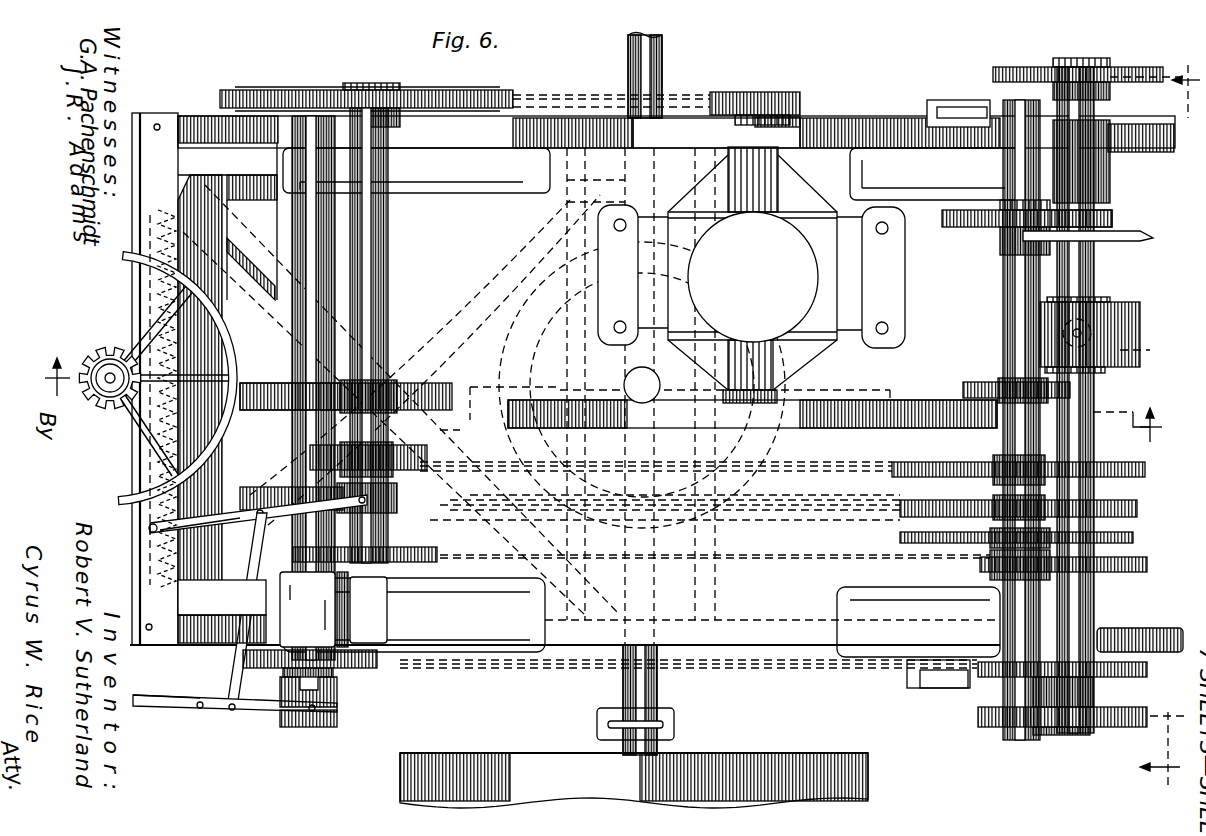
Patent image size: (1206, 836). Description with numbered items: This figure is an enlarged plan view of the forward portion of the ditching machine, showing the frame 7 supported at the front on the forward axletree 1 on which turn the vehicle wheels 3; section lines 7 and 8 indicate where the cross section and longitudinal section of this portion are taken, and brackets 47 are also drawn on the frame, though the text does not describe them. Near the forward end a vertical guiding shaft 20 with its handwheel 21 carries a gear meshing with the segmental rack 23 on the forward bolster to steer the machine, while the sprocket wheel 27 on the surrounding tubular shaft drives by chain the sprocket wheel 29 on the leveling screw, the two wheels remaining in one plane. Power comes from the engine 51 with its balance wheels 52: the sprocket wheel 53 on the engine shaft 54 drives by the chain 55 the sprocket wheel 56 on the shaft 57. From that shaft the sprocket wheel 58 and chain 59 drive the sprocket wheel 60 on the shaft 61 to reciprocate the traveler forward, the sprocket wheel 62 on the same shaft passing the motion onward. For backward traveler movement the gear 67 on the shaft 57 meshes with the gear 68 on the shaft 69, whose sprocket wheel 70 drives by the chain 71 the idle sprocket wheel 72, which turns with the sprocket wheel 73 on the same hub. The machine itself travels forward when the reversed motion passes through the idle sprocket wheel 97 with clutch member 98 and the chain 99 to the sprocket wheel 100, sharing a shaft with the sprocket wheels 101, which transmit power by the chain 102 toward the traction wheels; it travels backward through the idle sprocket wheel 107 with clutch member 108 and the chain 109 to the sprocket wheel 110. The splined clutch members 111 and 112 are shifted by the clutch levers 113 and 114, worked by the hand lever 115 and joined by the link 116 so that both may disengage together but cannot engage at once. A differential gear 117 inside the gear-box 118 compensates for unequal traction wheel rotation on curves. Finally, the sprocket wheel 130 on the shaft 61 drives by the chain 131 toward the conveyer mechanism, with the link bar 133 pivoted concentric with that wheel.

The forward axletree 1 is at (660, 676).
The vehicle wheels 3 is at (518, 755).
The frame 7 is at (1155, 427).
The segmental plates 8 is at (601, 400).
The guiding shaft 20 is at (96, 372).
The handwheel 21 is at (122, 258).
The segmental rack 23 is at (128, 460).
The sprocket wheel 27 is at (100, 360).
The sprocket wheel 29 is at (530, 320).
The bracket 47 is at (958, 104).
The engine 51 is at (751, 275).
The balance wheels 52 is at (752, 273).
The sprocket wheel 53 is at (778, 92).
The engine shaft 54 is at (802, 118).
The chain 55 is at (610, 98).
The sprocket wheel 56 is at (478, 92).
The shaft 57 is at (398, 246).
The sprocket wheel 58 is at (370, 455).
The chain 59 is at (842, 470).
The sprocket wheel 60 is at (928, 466).
The shaft 61 is at (1004, 445).
The sprocket wheel 62 is at (968, 390).
The gear 67 is at (432, 384).
The gear 68 is at (282, 382).
The shaft 69 is at (292, 300).
The sprocket wheel 70 is at (272, 485).
The chain 71 is at (476, 502).
The sprocket wheel 72 is at (920, 502).
The sprocket wheel 73 is at (900, 538).
The idle sprocket wheel 97 is at (368, 670).
The clutch member 98 is at (296, 672).
The chain 99 is at (552, 666).
The sprocket wheel 100 is at (1140, 676).
The sprocket wheels 101 is at (1035, 68).
The chain 102 is at (1160, 58).
The idle sprocket wheel 107 is at (408, 555).
The clutch member 108 is at (405, 535).
The chain 109 is at (782, 562).
The sprocket wheel 110 is at (1140, 568).
The splined clutch member 111 is at (338, 708).
The splined clutch member 112 is at (470, 505).
The clutch lever 113 is at (252, 712).
The clutch lever 114 is at (210, 530).
The hand lever 115 is at (147, 708).
The link 116 is at (240, 602).
The differential gear 117 is at (1145, 345).
The gear-box 118 is at (1130, 296).
The sprocket wheel 130 is at (962, 228).
The chain 131 is at (1190, 220).
The link bar 133 is at (1135, 241).